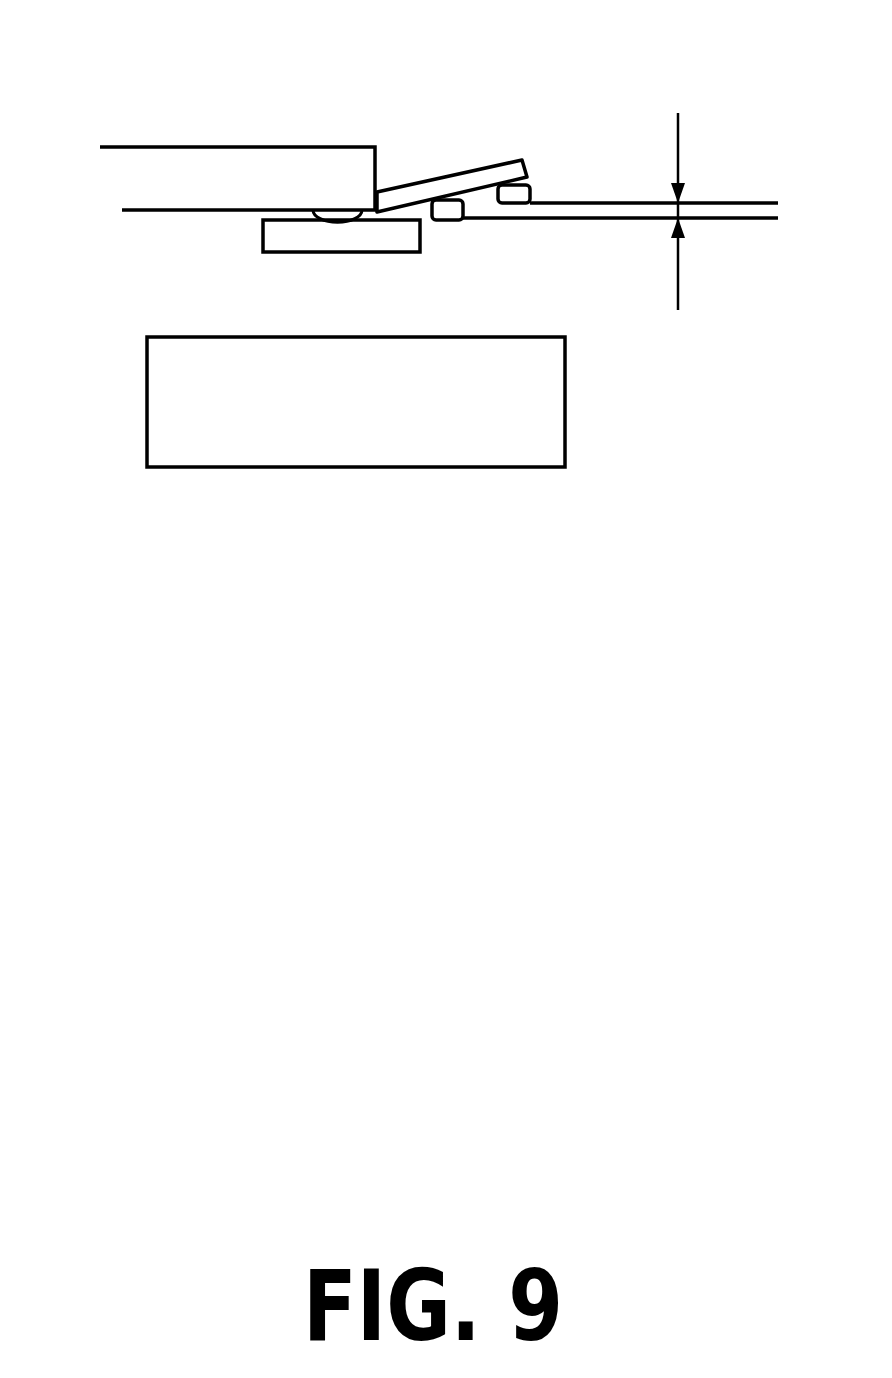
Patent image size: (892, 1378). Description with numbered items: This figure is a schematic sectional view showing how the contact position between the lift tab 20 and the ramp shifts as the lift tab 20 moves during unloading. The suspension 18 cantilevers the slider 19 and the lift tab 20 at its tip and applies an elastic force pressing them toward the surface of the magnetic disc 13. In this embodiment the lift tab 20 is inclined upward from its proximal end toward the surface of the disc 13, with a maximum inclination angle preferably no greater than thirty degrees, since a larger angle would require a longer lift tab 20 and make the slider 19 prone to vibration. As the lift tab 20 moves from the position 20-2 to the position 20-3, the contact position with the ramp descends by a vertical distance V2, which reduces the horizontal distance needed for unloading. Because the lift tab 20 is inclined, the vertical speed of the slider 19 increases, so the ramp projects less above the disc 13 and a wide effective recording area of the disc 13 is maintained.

The magnetic disc 13 is at (152, 432).
The suspension 18 is at (263, 160).
The slider 19 is at (336, 268).
The lift tab 20 is at (440, 169).
The lift tab position 20-2 is at (536, 180).
The lift tab position 20-3 is at (458, 233).
The vertical distance V2 is at (713, 211).